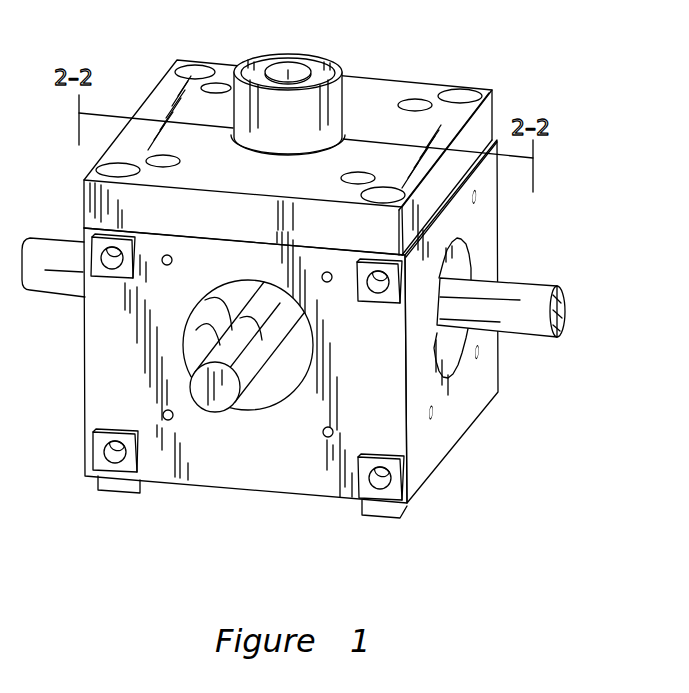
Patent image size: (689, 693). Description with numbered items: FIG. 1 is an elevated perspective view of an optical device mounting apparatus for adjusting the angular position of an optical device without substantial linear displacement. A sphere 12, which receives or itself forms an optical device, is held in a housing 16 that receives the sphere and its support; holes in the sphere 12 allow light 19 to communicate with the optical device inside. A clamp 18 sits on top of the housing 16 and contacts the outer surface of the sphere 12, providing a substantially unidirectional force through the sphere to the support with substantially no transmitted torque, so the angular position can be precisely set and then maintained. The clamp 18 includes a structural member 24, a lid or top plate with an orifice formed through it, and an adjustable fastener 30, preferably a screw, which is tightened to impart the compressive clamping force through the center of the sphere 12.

The sphere 12 is at (185, 348).
The housing 16 is at (485, 243).
The clamp 18 is at (362, 90).
The light 19 is at (567, 298).
The structural member 24 is at (492, 88).
The adjustable fastener 30 is at (300, 58).